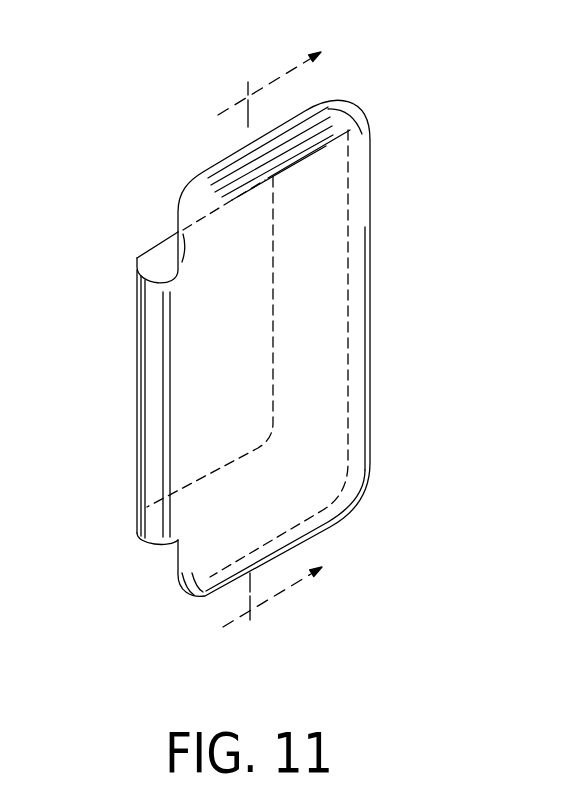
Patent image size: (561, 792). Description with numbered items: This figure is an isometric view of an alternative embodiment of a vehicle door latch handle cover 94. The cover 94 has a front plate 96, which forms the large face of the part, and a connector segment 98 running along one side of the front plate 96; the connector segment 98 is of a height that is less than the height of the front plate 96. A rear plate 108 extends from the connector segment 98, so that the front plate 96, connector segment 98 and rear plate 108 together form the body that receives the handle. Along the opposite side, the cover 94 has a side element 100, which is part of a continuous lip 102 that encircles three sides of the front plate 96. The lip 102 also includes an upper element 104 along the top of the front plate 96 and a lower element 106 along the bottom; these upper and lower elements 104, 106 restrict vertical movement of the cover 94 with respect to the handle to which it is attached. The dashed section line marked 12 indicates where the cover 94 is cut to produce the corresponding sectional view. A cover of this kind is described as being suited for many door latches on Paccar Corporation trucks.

The section line 12- 12 is at (296, 325).
The cover 94 is at (395, 147).
The front plate 96 is at (324, 372).
The connector segment 98 is at (137, 408).
The side element 100 is at (372, 323).
The lip 102 is at (372, 469).
The upper element 104 is at (210, 168).
The lower element 106 is at (330, 528).
The rear plate 108 is at (158, 240).